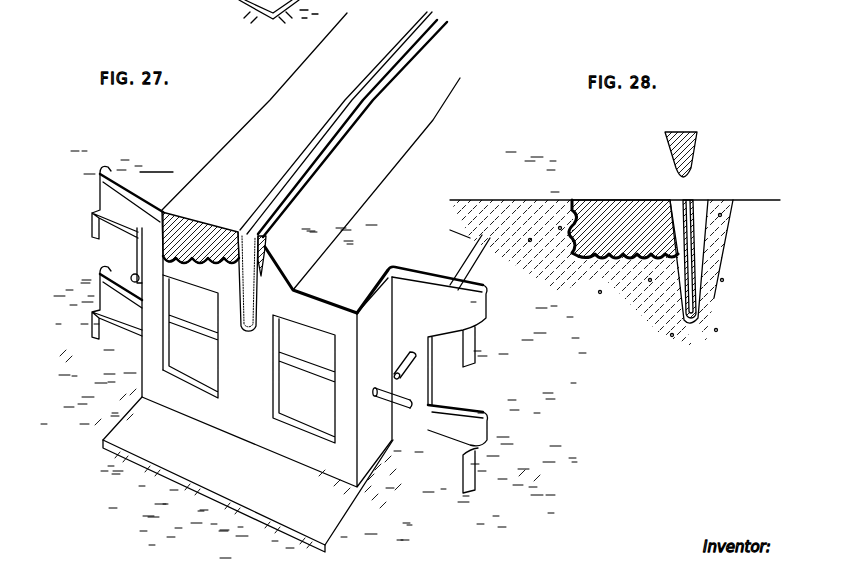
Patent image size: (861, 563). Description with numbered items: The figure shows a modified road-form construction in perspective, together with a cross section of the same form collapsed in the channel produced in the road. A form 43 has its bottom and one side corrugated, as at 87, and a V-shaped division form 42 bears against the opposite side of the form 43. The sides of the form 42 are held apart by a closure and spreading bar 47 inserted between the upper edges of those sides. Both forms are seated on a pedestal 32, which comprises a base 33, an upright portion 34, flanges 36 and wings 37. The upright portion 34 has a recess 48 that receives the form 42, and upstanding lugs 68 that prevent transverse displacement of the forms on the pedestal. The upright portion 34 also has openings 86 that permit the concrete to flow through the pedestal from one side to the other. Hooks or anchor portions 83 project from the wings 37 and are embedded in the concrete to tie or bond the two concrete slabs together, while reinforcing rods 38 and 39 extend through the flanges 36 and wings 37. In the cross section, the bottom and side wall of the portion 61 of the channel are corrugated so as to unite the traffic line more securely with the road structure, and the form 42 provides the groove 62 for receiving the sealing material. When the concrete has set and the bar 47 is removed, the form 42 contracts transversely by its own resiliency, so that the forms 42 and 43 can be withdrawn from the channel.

In FIG. 27, the form 43 is at (272, 107).
In FIG. 28, the form 43 is at (608, 200).
In FIG. 27, the closure and spreading bar 47 is at (397, 64).
In FIG. 28, the closure and spreading bar 47 is at (696, 143).
In FIG. 27, the V-shaped division form 42 is at (425, 130).
In FIG. 28, the V-shaped division form 42 is at (690, 202).
In FIG. 27, the recess 48 is at (248, 340).
In FIG. 27, the corrugations 87 is at (155, 233).
In FIG. 27, the upstanding lugs 68 is at (275, 258).
In FIG. 27, the pedestal 32 is at (330, 291).
In FIG. 27, the flanges 36 is at (381, 305).
In FIG. 27, the openings 86 is at (273, 392).
In FIG. 27, the upright portion 34 is at (250, 427).
In FIG. 27, the base 33 is at (155, 445).
In FIG. 27, the wings 37 is at (156, 193).
In FIG. 27, the hooks or anchor portions 83 is at (82, 337).
In FIG. 27, the reinforcing rod 39 is at (480, 253).
In FIG. 27, the reinforcing rod 38 is at (412, 402).
In FIG. 28, the portion of the channel 61 is at (617, 260).
In FIG. 28, the groove 62 is at (707, 253).